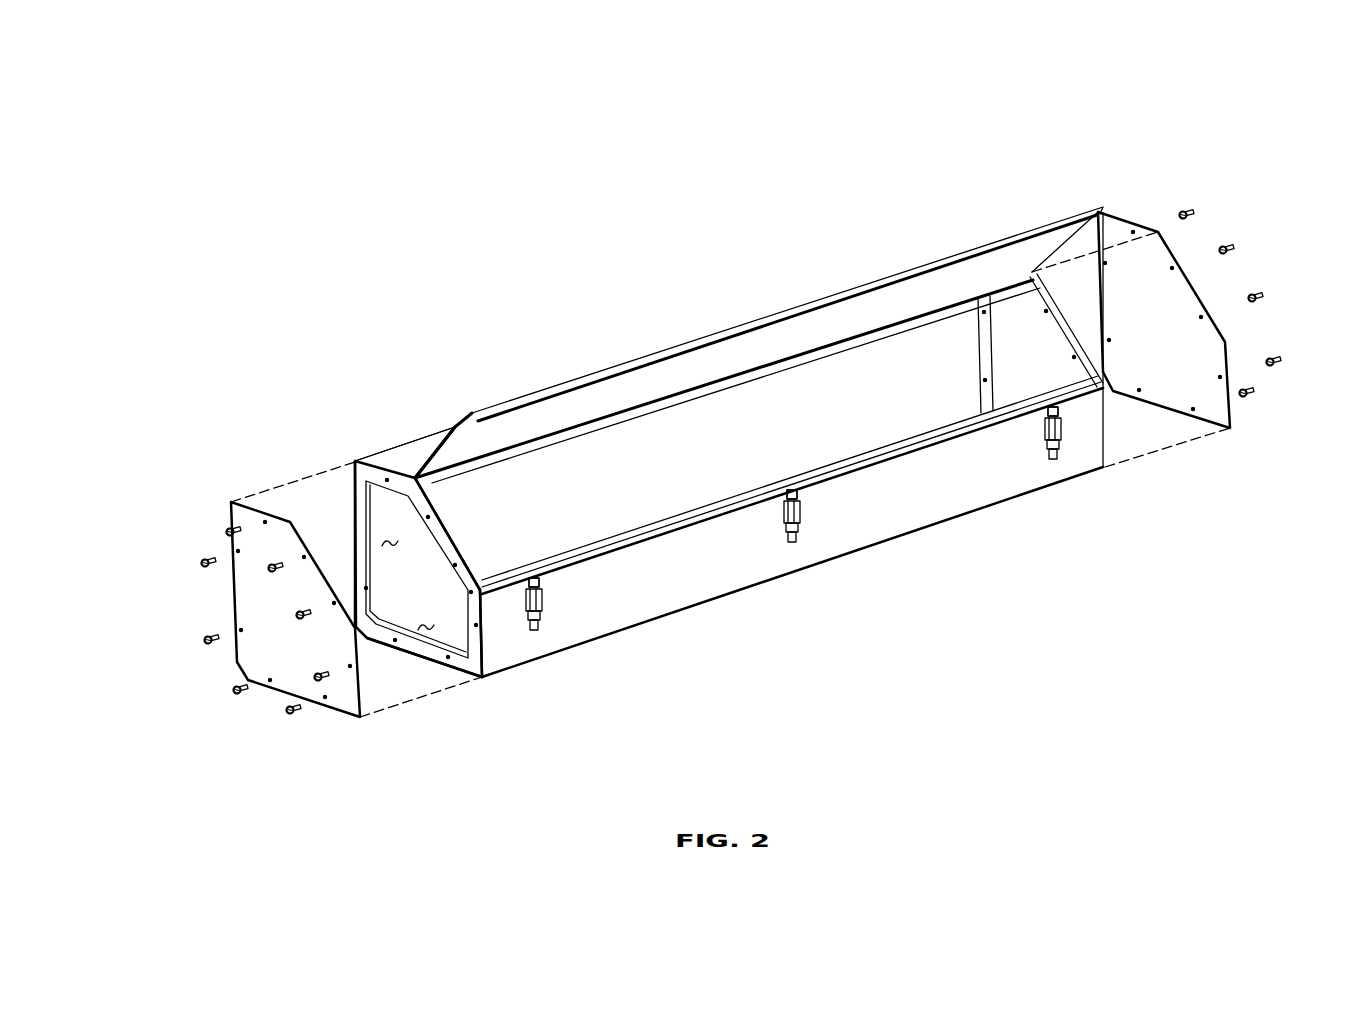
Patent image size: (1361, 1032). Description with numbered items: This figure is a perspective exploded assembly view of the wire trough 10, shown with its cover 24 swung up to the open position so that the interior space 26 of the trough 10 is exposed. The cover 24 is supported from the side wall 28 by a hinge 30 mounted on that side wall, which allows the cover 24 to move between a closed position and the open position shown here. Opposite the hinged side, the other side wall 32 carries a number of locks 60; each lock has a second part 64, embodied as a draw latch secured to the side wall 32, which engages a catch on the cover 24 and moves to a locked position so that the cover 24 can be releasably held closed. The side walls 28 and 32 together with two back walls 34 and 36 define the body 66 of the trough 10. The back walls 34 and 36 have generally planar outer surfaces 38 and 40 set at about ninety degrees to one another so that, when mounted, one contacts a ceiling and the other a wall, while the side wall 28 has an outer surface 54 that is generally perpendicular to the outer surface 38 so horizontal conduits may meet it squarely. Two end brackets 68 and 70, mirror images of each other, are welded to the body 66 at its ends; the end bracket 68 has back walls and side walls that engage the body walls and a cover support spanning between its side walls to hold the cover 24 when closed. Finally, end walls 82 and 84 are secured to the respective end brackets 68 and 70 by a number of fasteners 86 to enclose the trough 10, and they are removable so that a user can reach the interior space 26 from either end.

The wire trough 10 is at (853, 236).
The cover 24 is at (585, 372).
The interior space 26 is at (714, 458).
The side wall 28 is at (363, 457).
The hinge 30 is at (417, 437).
The side wall 32 is at (490, 652).
The back wall 34 is at (357, 540).
The back wall 36 is at (427, 633).
The outer surface 38 is at (385, 544).
The outer surface 40 is at (437, 655).
The outer surface 54 is at (413, 476).
The locks 60 is at (539, 638).
The second part 64 is at (545, 605).
The body 66 is at (688, 621).
The end bracket 68 is at (447, 537).
The end bracket 70 is at (1055, 338).
The end wall 82 is at (290, 520).
The end wall 84 is at (1120, 210).
The fasteners 86 is at (237, 692).